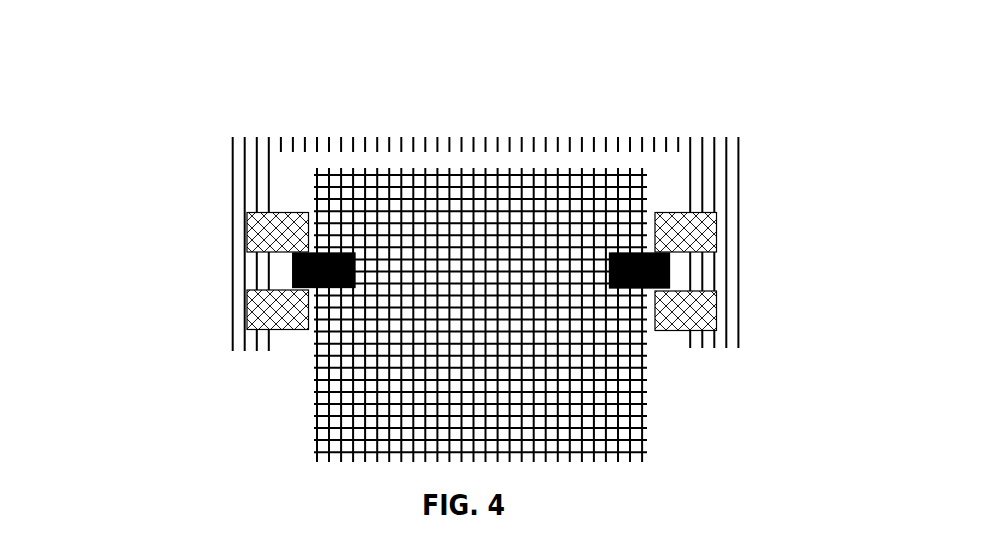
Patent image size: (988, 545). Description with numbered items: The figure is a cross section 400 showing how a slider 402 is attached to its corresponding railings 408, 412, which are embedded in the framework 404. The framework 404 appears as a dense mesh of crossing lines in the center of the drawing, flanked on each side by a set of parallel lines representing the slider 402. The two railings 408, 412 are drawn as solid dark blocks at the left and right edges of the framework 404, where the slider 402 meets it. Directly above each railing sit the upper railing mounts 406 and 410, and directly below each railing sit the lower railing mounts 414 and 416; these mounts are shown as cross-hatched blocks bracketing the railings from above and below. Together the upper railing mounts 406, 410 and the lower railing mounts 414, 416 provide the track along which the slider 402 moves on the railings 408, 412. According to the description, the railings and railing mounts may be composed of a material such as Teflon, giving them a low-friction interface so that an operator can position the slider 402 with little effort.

The cross section 400 is at (517, 105).
The slider 402 is at (740, 153).
The framework 404 is at (645, 190).
The upper railing mount 406 is at (716, 232).
The railing 408 is at (670, 272).
The upper railing mount 410 is at (247, 235).
The railing 412 is at (292, 271).
The lower railing mount 414 is at (245, 310).
The lower railing mount 416 is at (716, 310).